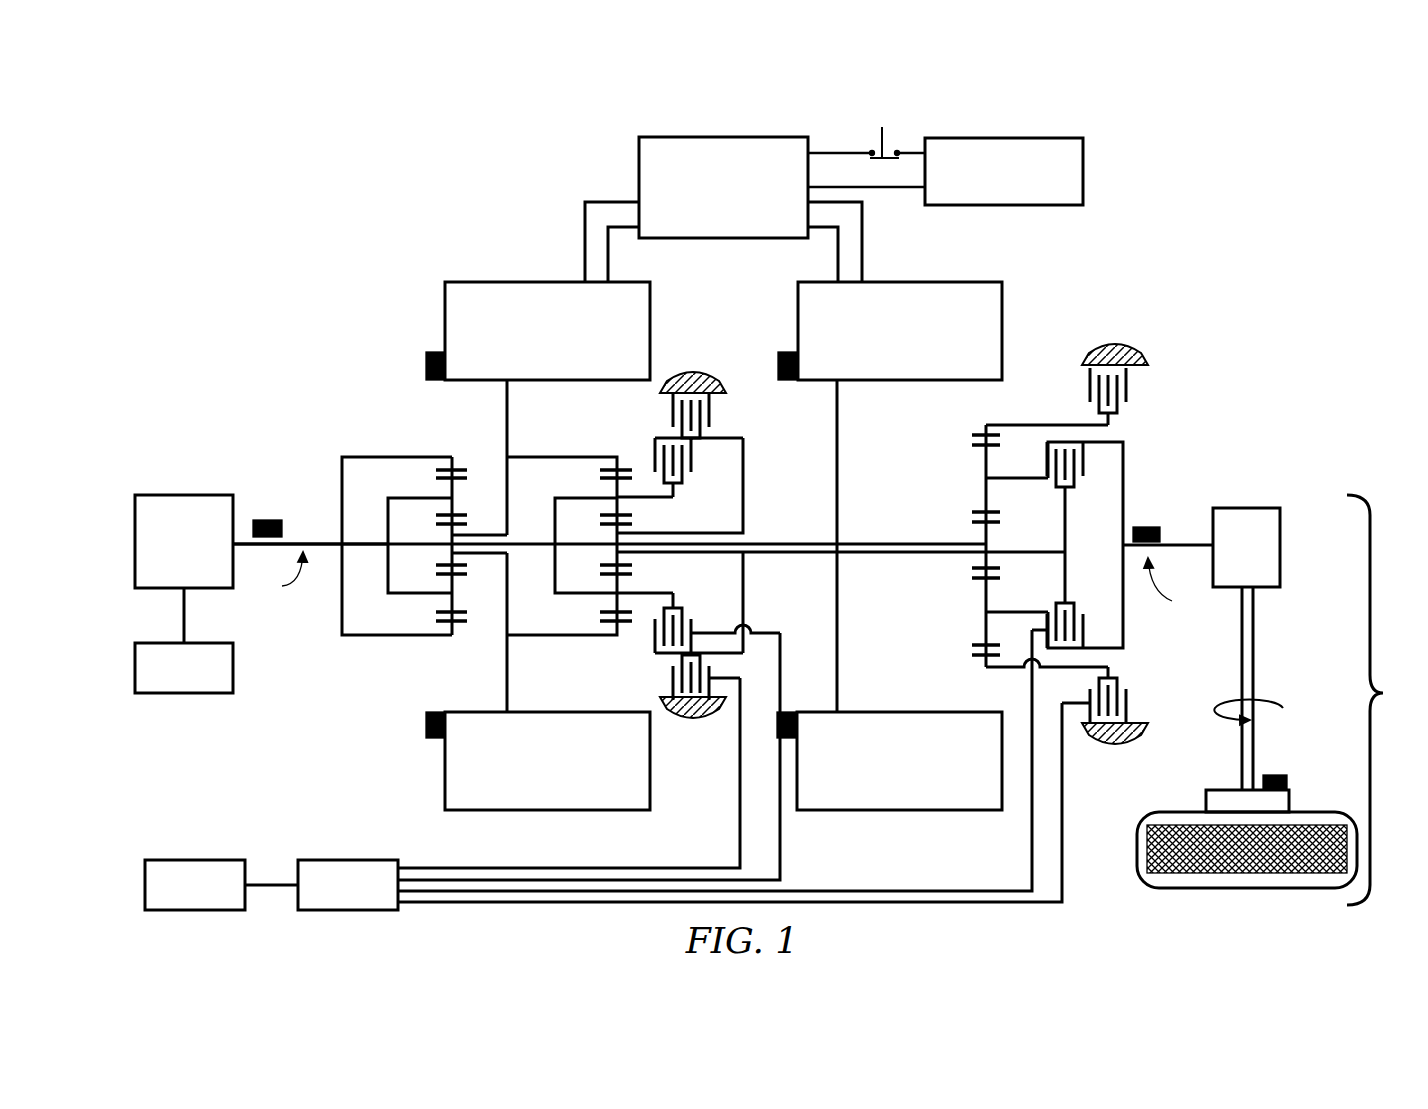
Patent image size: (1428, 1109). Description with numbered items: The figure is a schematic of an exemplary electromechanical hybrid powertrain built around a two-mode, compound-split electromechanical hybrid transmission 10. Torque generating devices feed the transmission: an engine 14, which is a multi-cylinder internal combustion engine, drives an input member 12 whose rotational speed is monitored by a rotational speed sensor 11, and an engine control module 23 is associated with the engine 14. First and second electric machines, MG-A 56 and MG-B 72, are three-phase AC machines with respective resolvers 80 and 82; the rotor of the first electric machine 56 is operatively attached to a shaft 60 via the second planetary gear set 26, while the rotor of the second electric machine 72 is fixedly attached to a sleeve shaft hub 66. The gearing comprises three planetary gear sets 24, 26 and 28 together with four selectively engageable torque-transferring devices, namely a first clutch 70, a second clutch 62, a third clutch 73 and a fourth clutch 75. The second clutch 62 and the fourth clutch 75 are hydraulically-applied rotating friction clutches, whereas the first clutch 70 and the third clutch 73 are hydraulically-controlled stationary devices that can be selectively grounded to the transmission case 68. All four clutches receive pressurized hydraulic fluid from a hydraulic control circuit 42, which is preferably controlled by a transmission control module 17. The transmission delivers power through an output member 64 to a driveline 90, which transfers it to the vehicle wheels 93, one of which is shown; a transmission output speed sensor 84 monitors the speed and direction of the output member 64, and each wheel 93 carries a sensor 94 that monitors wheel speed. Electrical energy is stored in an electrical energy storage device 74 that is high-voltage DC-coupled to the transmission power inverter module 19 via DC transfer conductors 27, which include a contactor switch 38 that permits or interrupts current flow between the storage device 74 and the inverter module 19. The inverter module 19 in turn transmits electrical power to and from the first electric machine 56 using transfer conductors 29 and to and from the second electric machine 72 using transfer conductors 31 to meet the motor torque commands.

The electromechanical hybrid transmission 10 is at (402, 240).
The rotational speed sensor 11 is at (267, 519).
The input member 12 is at (317, 541).
The engine 14 is at (191, 495).
The transmission control module 17 is at (186, 860).
The transmission power inverter module 19 is at (639, 158).
The engine control module 23 is at (234, 688).
The first planetary gear set 24 is at (440, 440).
The second planetary gear set 26 is at (611, 440).
The DC transfer conductors 27 is at (826, 153).
The third planetary gear set 28 is at (978, 424).
The transfer conductors 29 is at (585, 240).
The transfer conductors 31 is at (862, 238).
The contactor switch 38 is at (889, 130).
The hydraulic control circuit 42 is at (316, 860).
The first electric machine 56 is at (445, 318).
The shaft 60 is at (1040, 543).
The clutch C2 62 is at (1096, 486).
The output member 64 is at (1183, 543).
The sleeve shaft hub 66 is at (879, 536).
The transmission case 68 is at (693, 378).
The clutch C1 70 is at (1082, 384).
The second electric machine 72 is at (1002, 301).
The clutch C3 73 is at (722, 416).
The electrical energy storage device 74 is at (1083, 161).
The clutch C4 75 is at (702, 478).
The resolver 80 is at (426, 366).
The resolver 82 is at (788, 352).
The transmission output speed sensor 84 is at (1153, 526).
The driveline 90 is at (1318, 700).
The vehicle wheel 93 is at (1206, 800).
The wheel speed sensor 94 is at (1278, 775).